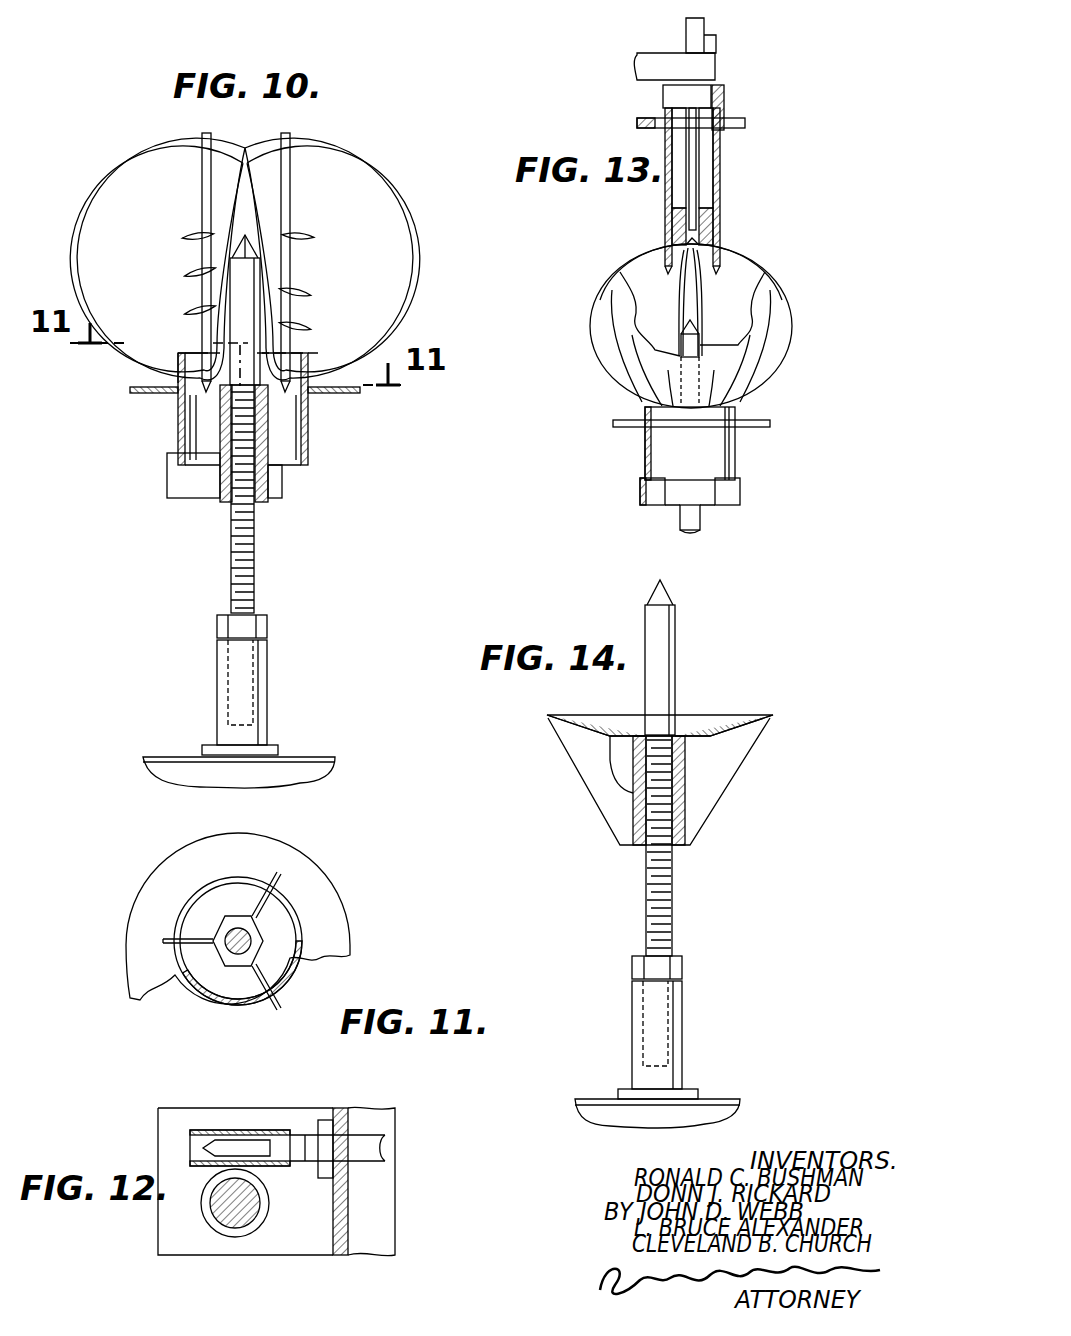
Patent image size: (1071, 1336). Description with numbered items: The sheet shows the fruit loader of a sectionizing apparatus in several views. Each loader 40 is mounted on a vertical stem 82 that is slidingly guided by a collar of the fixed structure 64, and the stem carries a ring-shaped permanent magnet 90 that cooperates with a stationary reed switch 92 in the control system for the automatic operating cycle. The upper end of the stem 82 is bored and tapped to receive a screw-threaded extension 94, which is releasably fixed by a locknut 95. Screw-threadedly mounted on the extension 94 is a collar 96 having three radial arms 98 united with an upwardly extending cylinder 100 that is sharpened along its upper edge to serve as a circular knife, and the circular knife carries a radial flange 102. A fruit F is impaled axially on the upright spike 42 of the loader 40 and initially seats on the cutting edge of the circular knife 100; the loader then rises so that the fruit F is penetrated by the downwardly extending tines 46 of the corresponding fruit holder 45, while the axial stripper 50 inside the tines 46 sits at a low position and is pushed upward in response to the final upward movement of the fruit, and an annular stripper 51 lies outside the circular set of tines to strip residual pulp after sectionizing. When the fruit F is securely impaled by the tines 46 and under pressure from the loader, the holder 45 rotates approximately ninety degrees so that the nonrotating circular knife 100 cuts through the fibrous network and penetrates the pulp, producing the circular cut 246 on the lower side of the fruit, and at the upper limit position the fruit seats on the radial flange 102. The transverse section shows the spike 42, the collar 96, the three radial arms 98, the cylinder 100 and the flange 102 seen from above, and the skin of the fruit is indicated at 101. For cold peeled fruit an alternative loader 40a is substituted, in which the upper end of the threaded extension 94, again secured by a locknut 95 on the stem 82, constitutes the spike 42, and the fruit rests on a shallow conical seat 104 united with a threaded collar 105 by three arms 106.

In FIG. 10, the fruit F is at (357, 213).
In FIG. 13, the fruit F is at (745, 284).
In FIG. 10, the tines 46 is at (292, 140).
In FIG. 13, the tines 46 is at (722, 167).
In FIG. 10, the spike 42 is at (240, 274).
In FIG. 11, the spike 42 is at (232, 952).
In FIG. 13, the spike 42 is at (700, 346).
In FIG. 14, the spike 42 is at (675, 652).
In FIG. 10, the circular cut 246 is at (178, 366).
In FIG. 10, the radial flange 102 is at (130, 390).
In FIG. 11, the radial flange 102 is at (332, 912).
In FIG. 13, the radial flange 102 is at (765, 420).
In FIG. 10, the cylinder 100 is at (310, 423).
In FIG. 11, the cylinder 100 is at (302, 970).
In FIG. 13, the cylinder 100 is at (738, 450).
In FIG. 10, the loader 40 is at (178, 416).
In FIG. 11, the loader 40 is at (128, 899).
In FIG. 13, the loader 40 is at (645, 452).
In FIG. 10, the radial arms 98 is at (180, 462).
In FIG. 11, the radial arms 98 is at (262, 898).
In FIG. 13, the radial arms 98 is at (645, 486).
In FIG. 10, the collar 96 is at (262, 498).
In FIG. 11, the collar 96 is at (262, 942).
In FIG. 13, the collar 96 is at (680, 510).
In FIG. 10, the screw-threaded extension 94 is at (228, 530).
In FIG. 14, the screw-threaded extension 94 is at (672, 905).
In FIG. 10, the locknut 95 is at (262, 625).
In FIG. 14, the locknut 95 is at (680, 968).
In FIG. 10, the vertical stem 82 is at (217, 682).
In FIG. 12, the vertical stem 82 is at (228, 1208).
In FIG. 14, the vertical stem 82 is at (683, 1055).
In FIG. 10, the fixed structure 64 is at (140, 780).
In FIG. 14, the fixed structure 64 is at (657, 1113).
In FIG. 11, the fruit skin 101 is at (295, 897).
In FIG. 13, the fruit skin 101 is at (645, 409).
In FIG. 12, the reed switch 92 is at (210, 1135).
In FIG. 12, the permanent magnet 90 is at (240, 1236).
In FIG. 13, the fruit holder 45 is at (725, 95).
In FIG. 13, the annular stripper 51 is at (637, 124).
In FIG. 13, the axial stripper 50 is at (713, 216).
In FIG. 14, the conical seat 104 is at (735, 720).
In FIG. 14, the arms 106 is at (698, 752).
In FIG. 14, the loader 40a is at (575, 775).
In FIG. 14, the threaded collar 105 is at (686, 791).